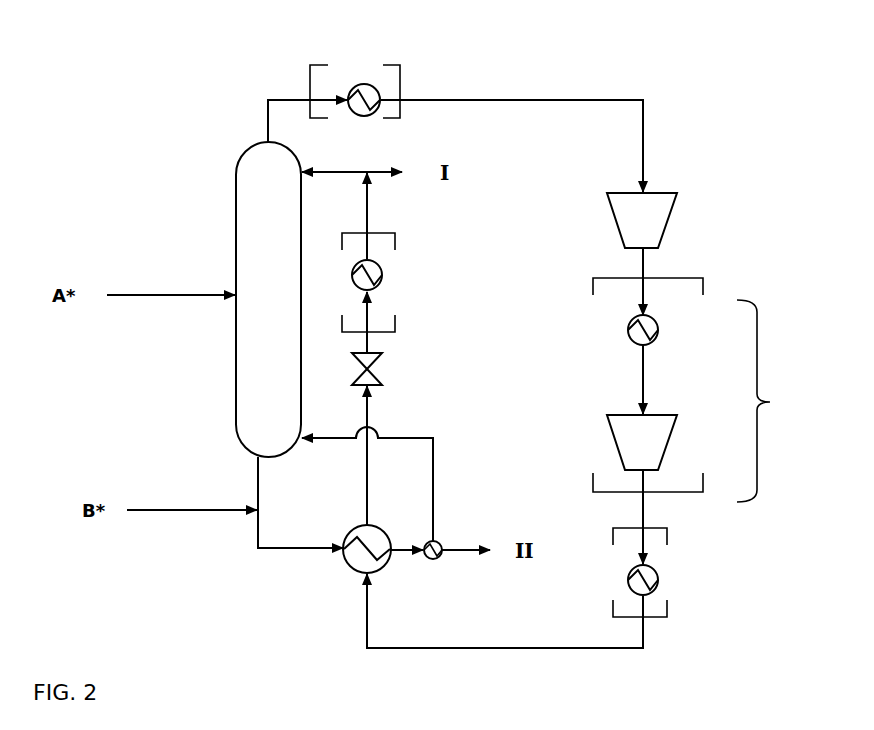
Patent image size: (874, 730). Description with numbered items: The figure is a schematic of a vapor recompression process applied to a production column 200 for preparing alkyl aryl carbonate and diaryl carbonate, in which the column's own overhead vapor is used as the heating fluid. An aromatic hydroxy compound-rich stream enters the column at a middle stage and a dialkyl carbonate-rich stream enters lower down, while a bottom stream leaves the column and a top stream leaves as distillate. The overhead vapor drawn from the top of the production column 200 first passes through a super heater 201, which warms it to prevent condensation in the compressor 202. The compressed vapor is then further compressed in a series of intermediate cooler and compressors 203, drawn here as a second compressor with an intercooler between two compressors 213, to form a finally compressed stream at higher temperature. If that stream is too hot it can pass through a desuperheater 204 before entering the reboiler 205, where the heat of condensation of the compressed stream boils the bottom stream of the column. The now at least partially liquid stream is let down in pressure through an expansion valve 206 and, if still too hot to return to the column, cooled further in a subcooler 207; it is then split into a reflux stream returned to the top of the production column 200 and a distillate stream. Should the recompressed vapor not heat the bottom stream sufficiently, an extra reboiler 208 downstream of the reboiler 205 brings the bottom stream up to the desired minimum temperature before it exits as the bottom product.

The production column 200 is at (268, 299).
The super heater 201 is at (348, 78).
The compressor 202 is at (688, 226).
The series of intermediate cooler and compressors 203 is at (708, 401).
The desuperheater 204 is at (672, 580).
The reboiler 205 is at (334, 570).
The expansion valve 206 is at (389, 372).
The subcooler 207 is at (393, 277).
The extra reboiler 208 is at (443, 567).
The intercooler between two compressors 213 is at (668, 332).